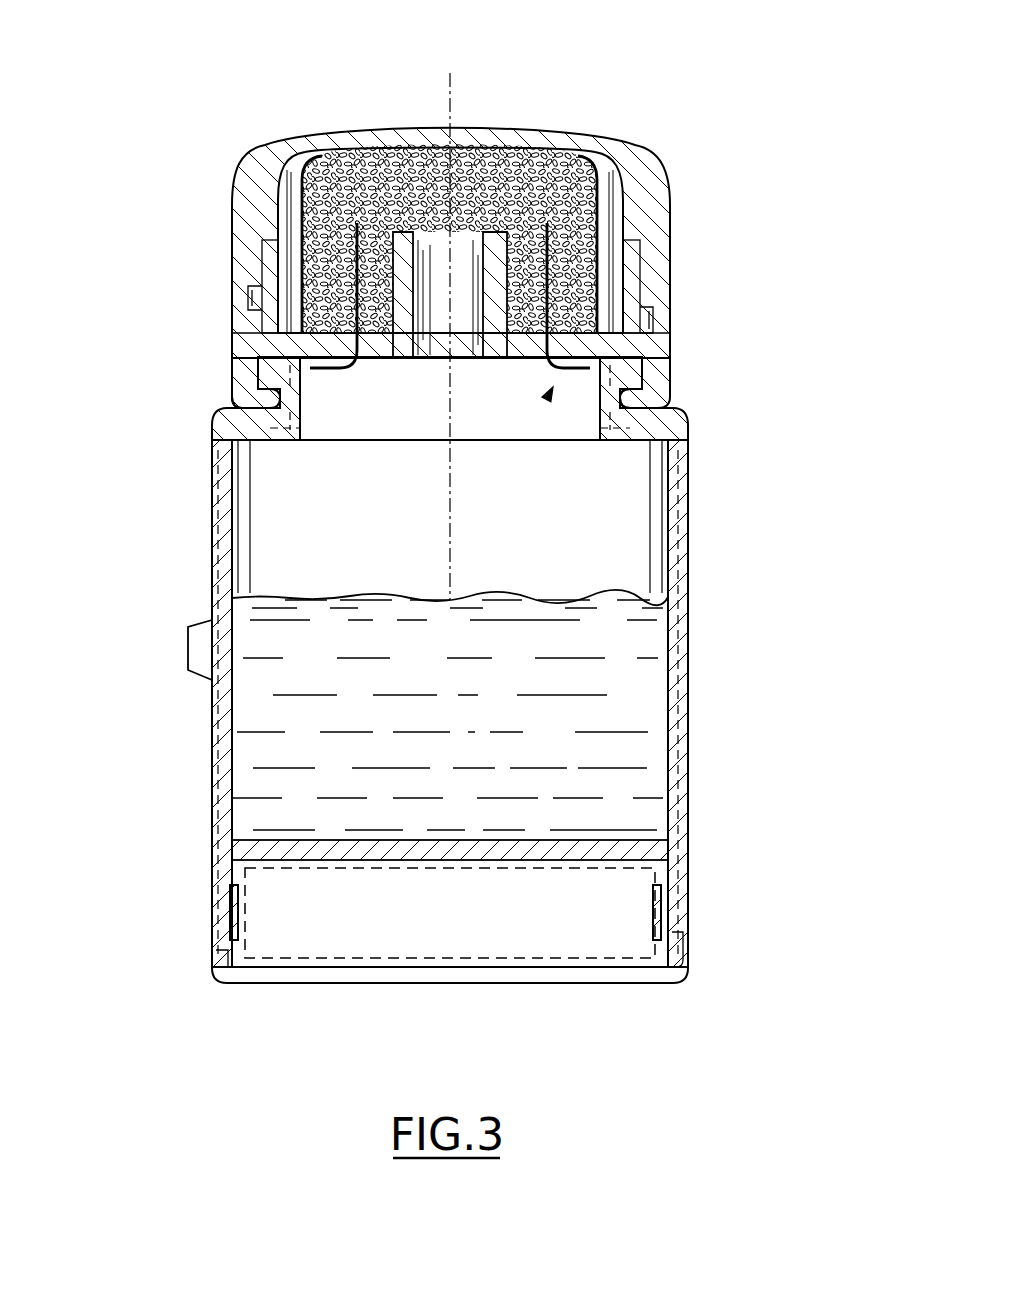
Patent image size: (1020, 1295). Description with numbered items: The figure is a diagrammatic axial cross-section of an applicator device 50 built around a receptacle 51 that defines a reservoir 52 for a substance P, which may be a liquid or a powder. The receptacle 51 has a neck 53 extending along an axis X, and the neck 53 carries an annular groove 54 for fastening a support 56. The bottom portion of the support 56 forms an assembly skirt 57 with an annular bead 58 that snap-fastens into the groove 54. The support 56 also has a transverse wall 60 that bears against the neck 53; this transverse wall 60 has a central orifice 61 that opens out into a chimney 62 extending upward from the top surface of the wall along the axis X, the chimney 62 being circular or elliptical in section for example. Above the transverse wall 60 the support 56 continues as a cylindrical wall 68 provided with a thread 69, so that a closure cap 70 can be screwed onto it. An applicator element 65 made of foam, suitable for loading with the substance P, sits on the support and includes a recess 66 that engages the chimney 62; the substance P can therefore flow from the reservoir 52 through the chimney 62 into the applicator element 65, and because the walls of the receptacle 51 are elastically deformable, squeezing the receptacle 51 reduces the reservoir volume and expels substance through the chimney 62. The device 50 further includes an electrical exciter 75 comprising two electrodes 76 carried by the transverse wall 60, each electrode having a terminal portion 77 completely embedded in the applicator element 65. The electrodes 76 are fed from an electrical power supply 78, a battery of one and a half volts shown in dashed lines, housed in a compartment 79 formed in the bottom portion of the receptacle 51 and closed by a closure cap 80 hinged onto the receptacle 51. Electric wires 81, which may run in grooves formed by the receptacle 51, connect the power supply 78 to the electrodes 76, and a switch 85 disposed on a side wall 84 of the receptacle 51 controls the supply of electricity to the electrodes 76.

The applicator device 50 is at (471, 698).
The receptacle 51 is at (680, 470).
The reservoir 52 is at (614, 686).
The neck 53 is at (640, 380).
The annular groove 54 is at (598, 408).
The support 56 is at (243, 363).
The assembly skirt 57 is at (233, 387).
The annular bead 58 is at (262, 442).
The transverse wall 60 is at (388, 350).
The central orifice 61 is at (466, 358).
The chimney 62 is at (428, 232).
The applicator element 65 is at (358, 222).
The recess 66 is at (467, 230).
The cylindrical wall 68 is at (630, 278).
The thread 69 is at (653, 320).
The closure cap 70 is at (273, 165).
The electrical exciter 75 is at (550, 392).
The electrodes 76 is at (548, 237).
The terminal portion 77 is at (598, 205).
The electrical power supply 78 is at (510, 925).
The compartment 79 is at (627, 965).
The closure cap 80 is at (302, 977).
The electric wires 81 is at (215, 557).
The side wall 84 is at (210, 603).
The switch 85 is at (197, 648).
The substance P is at (272, 754).
The axis X is at (455, 73).